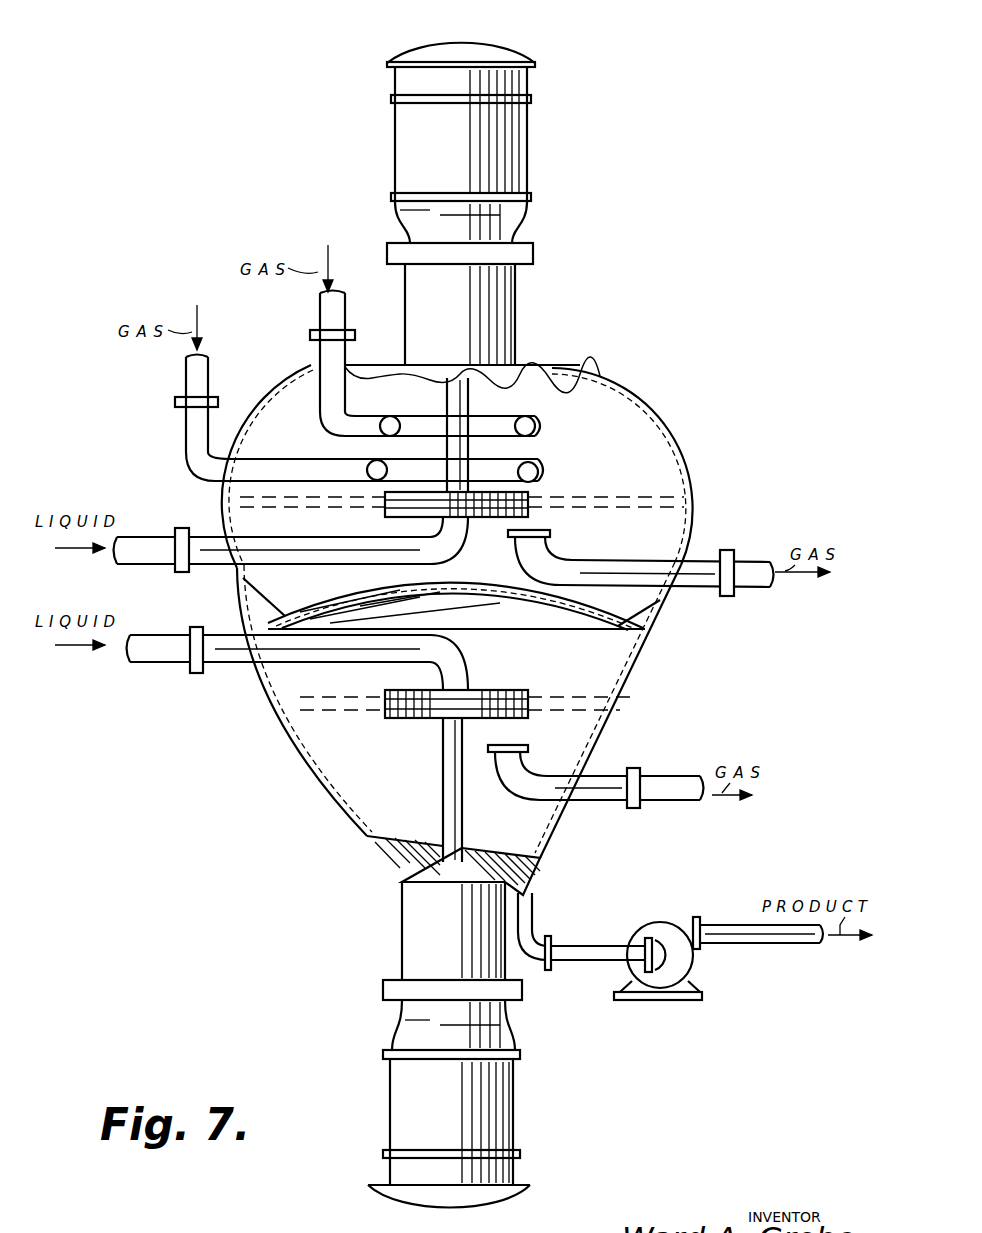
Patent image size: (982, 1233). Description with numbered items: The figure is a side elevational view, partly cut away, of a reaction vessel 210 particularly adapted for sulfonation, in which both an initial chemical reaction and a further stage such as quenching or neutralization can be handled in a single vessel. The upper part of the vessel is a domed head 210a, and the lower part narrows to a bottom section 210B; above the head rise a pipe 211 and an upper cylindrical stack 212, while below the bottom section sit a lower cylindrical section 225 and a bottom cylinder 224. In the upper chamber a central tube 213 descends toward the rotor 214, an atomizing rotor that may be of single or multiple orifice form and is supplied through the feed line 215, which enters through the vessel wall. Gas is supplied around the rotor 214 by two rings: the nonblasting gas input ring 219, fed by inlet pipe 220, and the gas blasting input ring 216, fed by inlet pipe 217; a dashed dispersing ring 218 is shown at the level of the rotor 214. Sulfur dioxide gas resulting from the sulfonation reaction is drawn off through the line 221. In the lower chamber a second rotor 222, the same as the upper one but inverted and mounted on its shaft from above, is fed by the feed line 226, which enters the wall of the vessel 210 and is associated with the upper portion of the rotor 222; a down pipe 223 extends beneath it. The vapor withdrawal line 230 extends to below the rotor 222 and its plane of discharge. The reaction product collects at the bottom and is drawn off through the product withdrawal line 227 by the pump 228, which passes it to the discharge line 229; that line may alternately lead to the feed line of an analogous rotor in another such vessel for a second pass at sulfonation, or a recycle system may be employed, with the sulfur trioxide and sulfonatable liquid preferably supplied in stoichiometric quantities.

The reaction vessel 210 is at (689, 515).
The upper dome section of vessel 210a is at (633, 390).
The lower conical bottom of vessel 210B is at (562, 815).
The upper outlet pipe 211 is at (500, 318).
The upper cylinder / vent stack 212 is at (507, 158).
The central feed tube 213 is at (469, 405).
The rotor 214 is at (530, 512).
The feed line 215 is at (285, 554).
The gas blasting input ring 216 is at (532, 466).
The gas inlet pipe 217 is at (188, 385).
The dispersing ring 218 is at (383, 497).
The nonblasting gas input ring 219 is at (418, 428).
The gas inlet pipe 220 is at (322, 310).
The line 221 is at (592, 567).
The rotor 222 is at (510, 692).
The down pipe 223 is at (443, 765).
The bottom cylinder 224 is at (500, 1112).
The lower cylinder section 225 is at (402, 937).
The feed line 226 is at (262, 662).
The product withdrawal line 227 is at (534, 916).
The pump 228 is at (656, 930).
The discharge line 229 is at (748, 942).
The vapor withdrawal line 230 is at (545, 775).